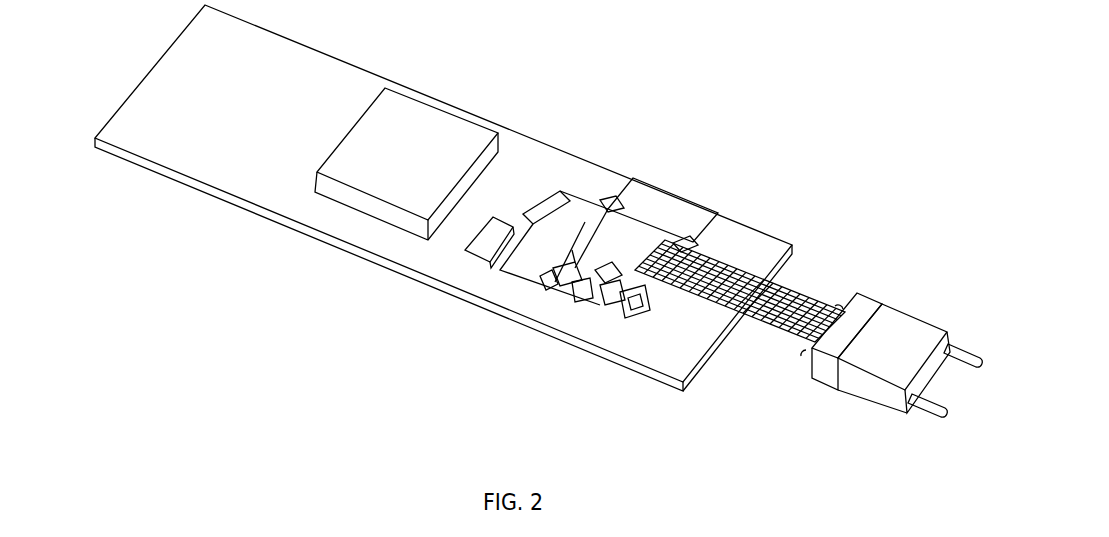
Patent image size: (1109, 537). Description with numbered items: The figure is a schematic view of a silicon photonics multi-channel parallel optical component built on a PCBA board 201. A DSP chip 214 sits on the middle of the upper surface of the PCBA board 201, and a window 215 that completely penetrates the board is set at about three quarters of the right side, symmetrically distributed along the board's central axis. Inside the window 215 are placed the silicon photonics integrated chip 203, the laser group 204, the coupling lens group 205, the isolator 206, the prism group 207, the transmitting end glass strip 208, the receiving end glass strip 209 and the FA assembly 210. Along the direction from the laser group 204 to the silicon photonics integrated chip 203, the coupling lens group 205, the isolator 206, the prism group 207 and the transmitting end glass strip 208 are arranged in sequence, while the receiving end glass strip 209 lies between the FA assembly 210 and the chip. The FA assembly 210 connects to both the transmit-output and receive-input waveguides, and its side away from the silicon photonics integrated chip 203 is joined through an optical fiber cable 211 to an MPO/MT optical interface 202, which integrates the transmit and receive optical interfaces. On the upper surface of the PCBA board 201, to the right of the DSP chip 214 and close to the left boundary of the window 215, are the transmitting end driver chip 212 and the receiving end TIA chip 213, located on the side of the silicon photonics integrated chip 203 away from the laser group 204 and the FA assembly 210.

The PCBA board 201 is at (195, 117).
The MPO/MT optical interface 202 is at (875, 340).
The silicon photonics integrated chip 203 is at (567, 207).
The laser group 204 is at (638, 308).
The coupling lens group 205 is at (610, 300).
The isolator 206 is at (585, 298).
The prism group 207 is at (567, 282).
The transmitting end glass strip 208 is at (550, 283).
The receiving end glass strip 209 is at (613, 207).
The FA assembly 210 is at (643, 222).
The optical fiber cable 211 is at (788, 297).
The transmitting end driver chip 212 is at (483, 252).
The receiving end TIA chip 213 is at (548, 190).
The DSP chip 214 is at (422, 140).
The window 215 is at (689, 240).